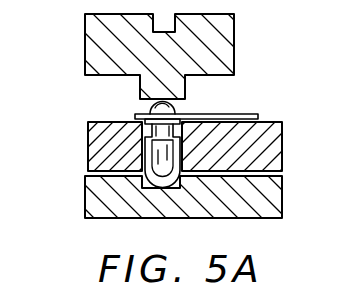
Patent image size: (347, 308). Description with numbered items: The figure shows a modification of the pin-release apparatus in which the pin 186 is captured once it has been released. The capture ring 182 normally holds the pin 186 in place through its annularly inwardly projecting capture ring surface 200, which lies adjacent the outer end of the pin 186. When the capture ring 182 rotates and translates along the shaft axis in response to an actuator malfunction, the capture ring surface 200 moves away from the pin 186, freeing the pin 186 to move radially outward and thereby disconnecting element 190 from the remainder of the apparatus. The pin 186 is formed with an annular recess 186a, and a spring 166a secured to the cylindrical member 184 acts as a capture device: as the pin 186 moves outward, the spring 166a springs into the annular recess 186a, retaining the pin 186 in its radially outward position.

The capture ring 182 is at (225, 50).
The cylindrical member 184 is at (267, 147).
The element disconnected by pin release 190 is at (273, 200).
The spring 166a is at (205, 114).
The capture ring surface 200 is at (148, 106).
The pin 186 is at (157, 155).
The annular recess 186a is at (150, 130).